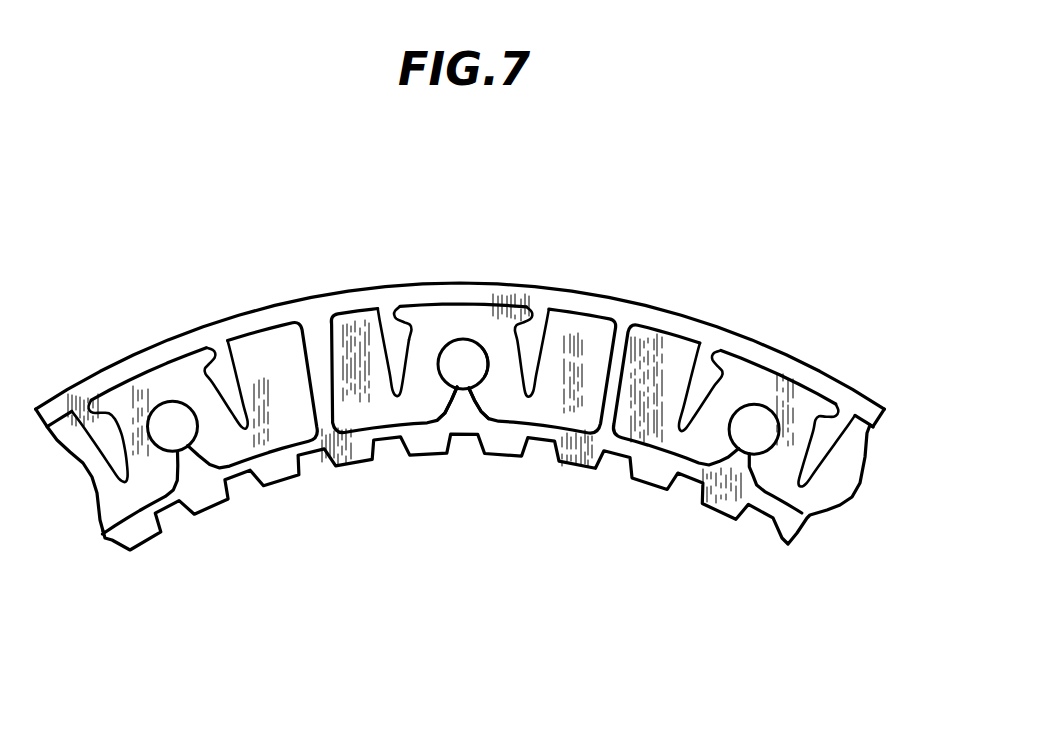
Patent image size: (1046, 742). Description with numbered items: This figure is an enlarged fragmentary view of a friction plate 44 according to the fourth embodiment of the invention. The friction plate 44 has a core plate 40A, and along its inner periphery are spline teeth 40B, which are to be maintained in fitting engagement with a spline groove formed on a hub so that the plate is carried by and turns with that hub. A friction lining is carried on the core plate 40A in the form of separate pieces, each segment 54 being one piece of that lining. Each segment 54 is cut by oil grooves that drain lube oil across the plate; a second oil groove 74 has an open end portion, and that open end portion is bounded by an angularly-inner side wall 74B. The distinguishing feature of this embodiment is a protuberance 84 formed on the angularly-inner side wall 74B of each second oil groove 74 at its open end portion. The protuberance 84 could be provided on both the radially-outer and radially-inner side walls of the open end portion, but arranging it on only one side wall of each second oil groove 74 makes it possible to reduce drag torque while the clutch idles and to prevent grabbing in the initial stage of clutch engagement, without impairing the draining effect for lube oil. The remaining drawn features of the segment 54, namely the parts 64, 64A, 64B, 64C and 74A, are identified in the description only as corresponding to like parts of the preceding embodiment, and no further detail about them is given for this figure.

The friction plate 44 is at (460, 364).
The core plate 40A is at (720, 337).
The spline teeth 40B is at (720, 500).
The segment 54 is at (467, 320).
The element corresponding to sign 63 64 is at (488, 391).
The element corresponding to sign 63A 64A is at (420, 500).
The element corresponding to sign 63B 64B is at (442, 458).
The element corresponding to sign 63C 64C is at (478, 366).
The second oil groove 74 is at (364, 390).
The element corresponding to sign 73A 74A is at (399, 397).
The angularly-inner side wall 74B is at (413, 328).
The protuberance 84 is at (400, 310).